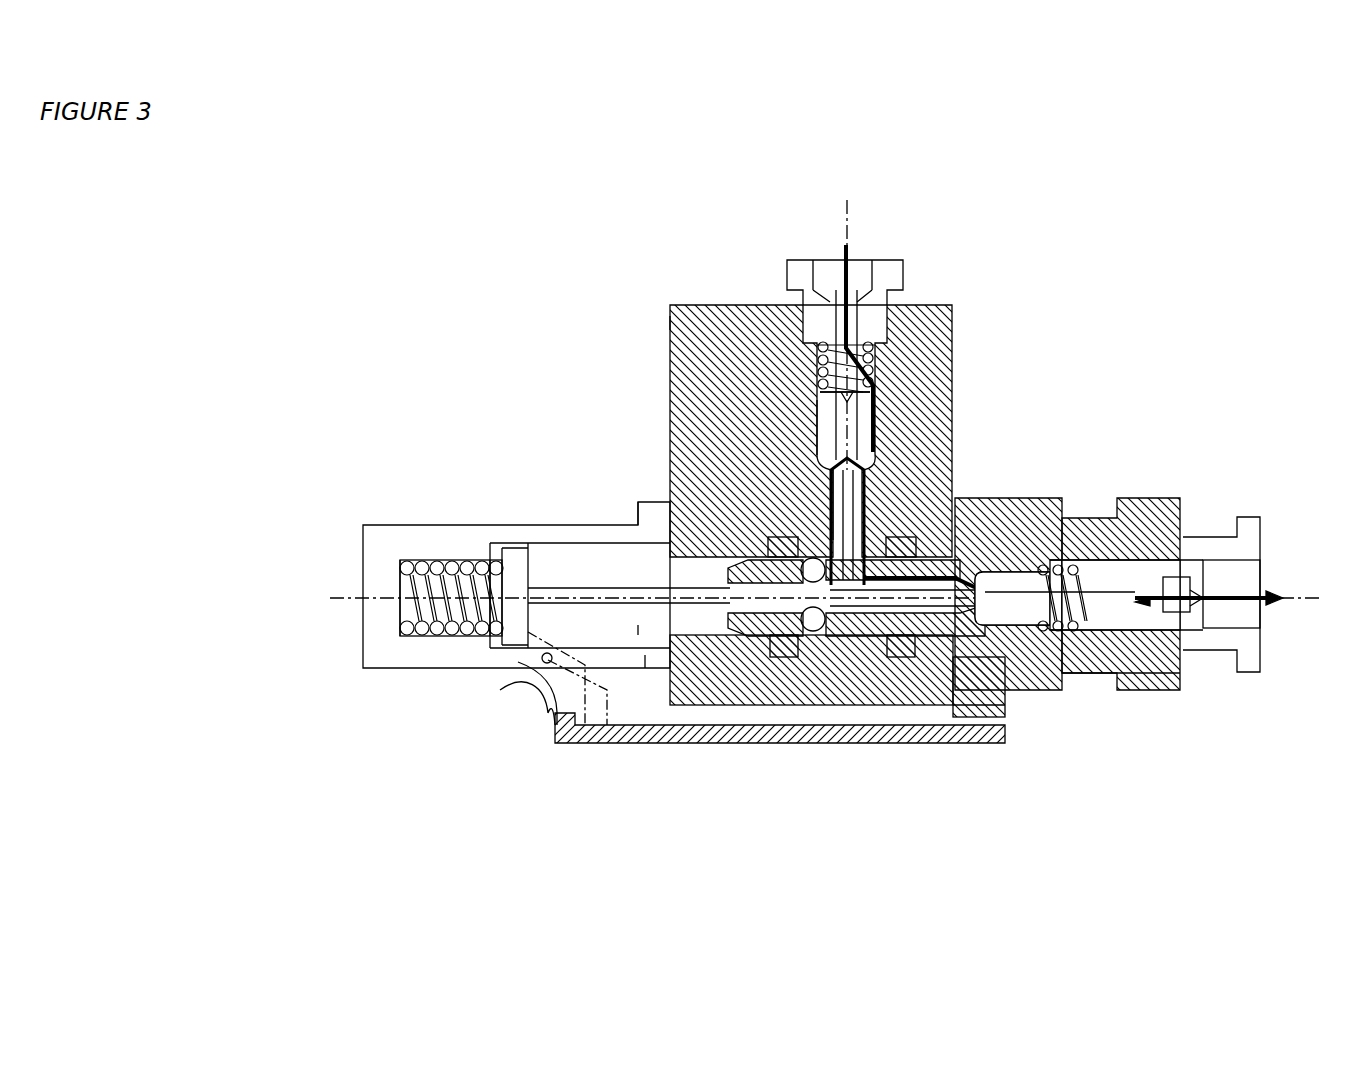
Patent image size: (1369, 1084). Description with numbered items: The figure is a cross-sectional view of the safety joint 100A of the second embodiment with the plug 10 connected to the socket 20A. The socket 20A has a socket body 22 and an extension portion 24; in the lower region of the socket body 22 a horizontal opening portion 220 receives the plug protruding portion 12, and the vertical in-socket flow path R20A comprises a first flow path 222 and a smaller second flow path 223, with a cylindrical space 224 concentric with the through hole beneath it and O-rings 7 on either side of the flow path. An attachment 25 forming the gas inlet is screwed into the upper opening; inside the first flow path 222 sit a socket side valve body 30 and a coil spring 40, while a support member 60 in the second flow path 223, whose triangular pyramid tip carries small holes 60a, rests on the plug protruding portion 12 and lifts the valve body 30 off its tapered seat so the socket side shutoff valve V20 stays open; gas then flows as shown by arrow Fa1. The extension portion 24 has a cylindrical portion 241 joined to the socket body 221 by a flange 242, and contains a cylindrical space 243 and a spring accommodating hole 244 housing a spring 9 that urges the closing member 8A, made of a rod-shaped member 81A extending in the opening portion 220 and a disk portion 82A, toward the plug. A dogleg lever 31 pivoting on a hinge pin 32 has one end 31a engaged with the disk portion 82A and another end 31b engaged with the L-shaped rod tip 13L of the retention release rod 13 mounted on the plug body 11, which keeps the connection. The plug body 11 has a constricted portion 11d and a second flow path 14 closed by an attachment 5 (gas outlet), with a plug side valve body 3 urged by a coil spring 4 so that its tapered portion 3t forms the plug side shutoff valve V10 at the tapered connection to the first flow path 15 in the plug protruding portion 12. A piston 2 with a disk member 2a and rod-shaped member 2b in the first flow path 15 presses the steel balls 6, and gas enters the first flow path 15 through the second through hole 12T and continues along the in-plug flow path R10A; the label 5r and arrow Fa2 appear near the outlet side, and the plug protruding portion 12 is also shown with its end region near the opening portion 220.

The safety joint 100A is at (1170, 292).
The socket 20A is at (362, 210).
The attachment 25 is at (790, 270).
The coil spring 40 is at (895, 330).
The socket body 22 is at (452, 258).
The opening portion 220 is at (670, 495).
The socket body 221 is at (670, 316).
The first flow path 222 is at (815, 430).
The second flow path 223 is at (830, 472).
The cylindrical space 224 is at (840, 505).
The socket side shutoff valve V20 is at (815, 418).
The socket side valve body 30 is at (870, 380).
The support member 60 is at (880, 450).
The small holes 60a is at (880, 410).
The in-socket flow path R20A is at (896, 384).
The arrow Fa1 is at (852, 250).
The extension portion 24 is at (452, 425).
The spring 9 is at (420, 632).
The cylindrical portion 241 is at (575, 543).
The flange 242 is at (638, 503).
The cylindrical space 243 is at (548, 545).
The spring accommodating hole 244 is at (505, 585).
The hinge pin 32 is at (523, 655).
The other end of the lever 31a is at (447, 635).
The closing member holding mechanism 31 is at (553, 662).
The end of the lever 31b is at (578, 713).
The rod tip 13L is at (535, 708).
The piston 2 is at (1022, 400).
The disk member 2a is at (868, 500).
The rod-shaped member 2b is at (856, 522).
The tapered portion 3t is at (955, 540).
The steel balls 6 is at (842, 600).
The O-rings 7 is at (788, 658).
The plug 10 is at (1245, 845).
The plug side valve body 3 is at (1023, 618).
The plug side shutoff valve V10 is at (1020, 693).
The coil spring 4 is at (1100, 512).
The second flow path 14 is at (1073, 693).
The first flow path 15 is at (1013, 693).
The plug body 11 is at (1150, 698).
The constricted portion 11d is at (1108, 697).
The plug protruding portion 12 is at (927, 693).
The second through hole 12T is at (875, 708).
The retention release rod 13 is at (880, 743).
The attachment 5 is at (1262, 675).
The connector bore 5r is at (1257, 590).
The flow path in the plug R10A is at (1182, 633).
The actuating force Fa2 is at (1143, 590).
The closing member 8A is at (695, 838).
The disk portion 82A is at (637, 630).
The rod-shaped member 81A is at (647, 660).